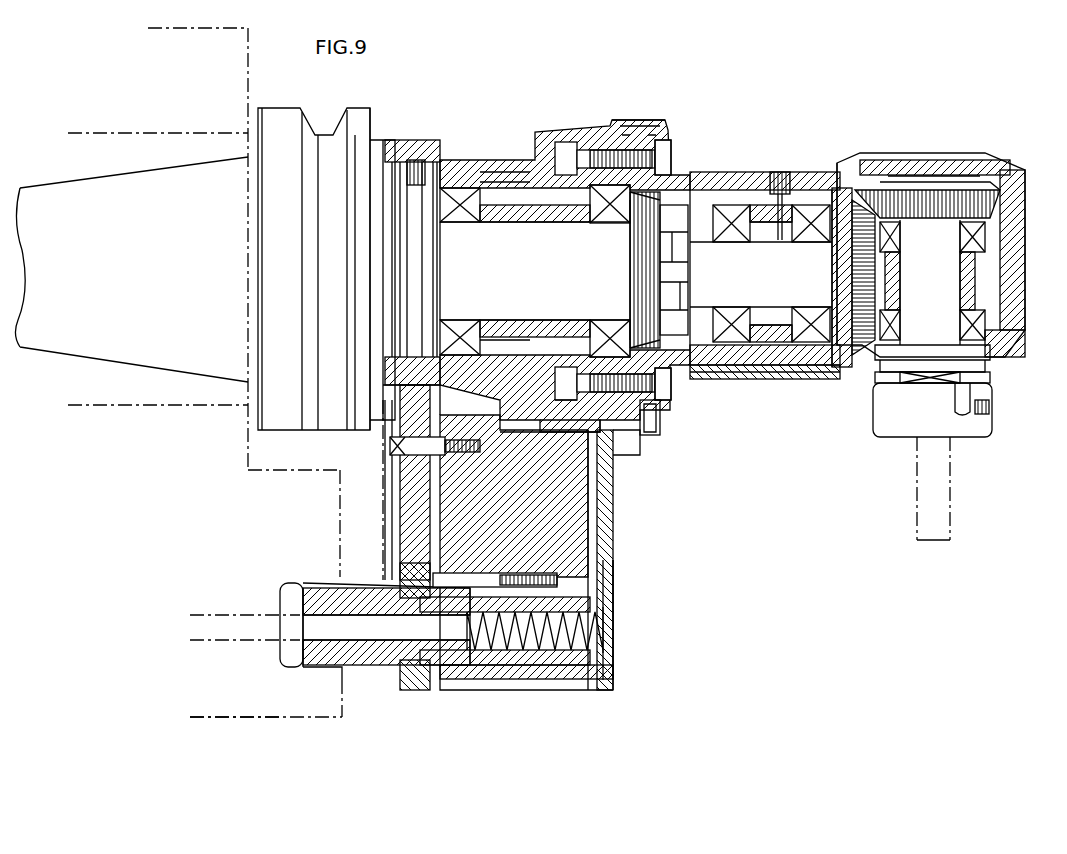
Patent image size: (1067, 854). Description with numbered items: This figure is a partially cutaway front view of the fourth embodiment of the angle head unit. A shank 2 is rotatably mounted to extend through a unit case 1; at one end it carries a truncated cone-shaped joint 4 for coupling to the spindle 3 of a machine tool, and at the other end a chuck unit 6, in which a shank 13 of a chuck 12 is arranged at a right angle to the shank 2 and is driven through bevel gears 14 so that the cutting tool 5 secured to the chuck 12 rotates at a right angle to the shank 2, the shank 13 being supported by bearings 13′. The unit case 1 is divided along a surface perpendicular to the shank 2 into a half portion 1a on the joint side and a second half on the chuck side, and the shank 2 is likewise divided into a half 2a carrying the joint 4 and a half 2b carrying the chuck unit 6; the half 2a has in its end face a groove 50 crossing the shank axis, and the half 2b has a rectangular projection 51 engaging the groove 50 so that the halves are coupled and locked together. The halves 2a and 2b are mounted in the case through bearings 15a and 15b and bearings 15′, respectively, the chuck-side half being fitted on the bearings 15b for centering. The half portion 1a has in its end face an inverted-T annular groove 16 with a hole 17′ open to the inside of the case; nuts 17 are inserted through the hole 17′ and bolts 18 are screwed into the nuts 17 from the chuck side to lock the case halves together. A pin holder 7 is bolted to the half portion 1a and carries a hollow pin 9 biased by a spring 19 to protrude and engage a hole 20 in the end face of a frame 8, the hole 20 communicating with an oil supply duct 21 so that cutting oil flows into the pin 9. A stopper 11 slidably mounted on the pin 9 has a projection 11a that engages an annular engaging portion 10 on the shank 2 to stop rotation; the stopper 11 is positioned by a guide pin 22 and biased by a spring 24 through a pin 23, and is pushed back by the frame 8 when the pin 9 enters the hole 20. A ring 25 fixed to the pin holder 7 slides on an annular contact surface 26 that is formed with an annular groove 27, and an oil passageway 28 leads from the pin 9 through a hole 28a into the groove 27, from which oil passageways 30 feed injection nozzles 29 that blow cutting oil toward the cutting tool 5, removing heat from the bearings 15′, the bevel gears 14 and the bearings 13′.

The unit case 1 is at (606, 120).
The half portion of the unit case 1a is at (453, 195).
The shank 2 is at (500, 240).
The half of the shank 2a is at (542, 240).
The half of the shank 2b is at (790, 270).
The spindle 3 is at (128, 135).
The joint 4 is at (55, 348).
The cutting tool 5 is at (935, 500).
The chuck unit 6 is at (990, 278).
The pin holder 7 is at (560, 520).
The frame 8 is at (282, 712).
The pin 9 is at (445, 655).
The engaging portion 10 is at (393, 400).
The stopper 11 is at (415, 545).
The projection 11a is at (410, 512).
The chuck 12 is at (985, 405).
The shank 13 is at (935, 292).
The bearings 13′ is at (975, 232).
The bevel gears 14 is at (912, 205).
The bearings 15a is at (452, 185).
The bearings 15b is at (566, 150).
The bearings 15′ is at (782, 200).
The annular groove 16 is at (606, 195).
The nuts 17 is at (538, 175).
The hole 17′ is at (565, 385).
The bolts 18 is at (665, 157).
The spring 19 is at (598, 635).
The hole 20 is at (352, 720).
The oil supply duct 21 is at (240, 615).
The guide pin 22 is at (398, 448).
The pin 23 is at (500, 640).
The spring 24 is at (560, 580).
The ring 25 is at (648, 122).
The contact surface 26 is at (655, 420).
The annular groove 27 is at (652, 133).
The oil passageway 28 is at (598, 560).
The hole 28a is at (638, 450).
The injection nozzles 29 is at (798, 380).
The oil passageways 30 is at (770, 380).
The groove 50 is at (648, 215).
The projection 51 is at (682, 345).